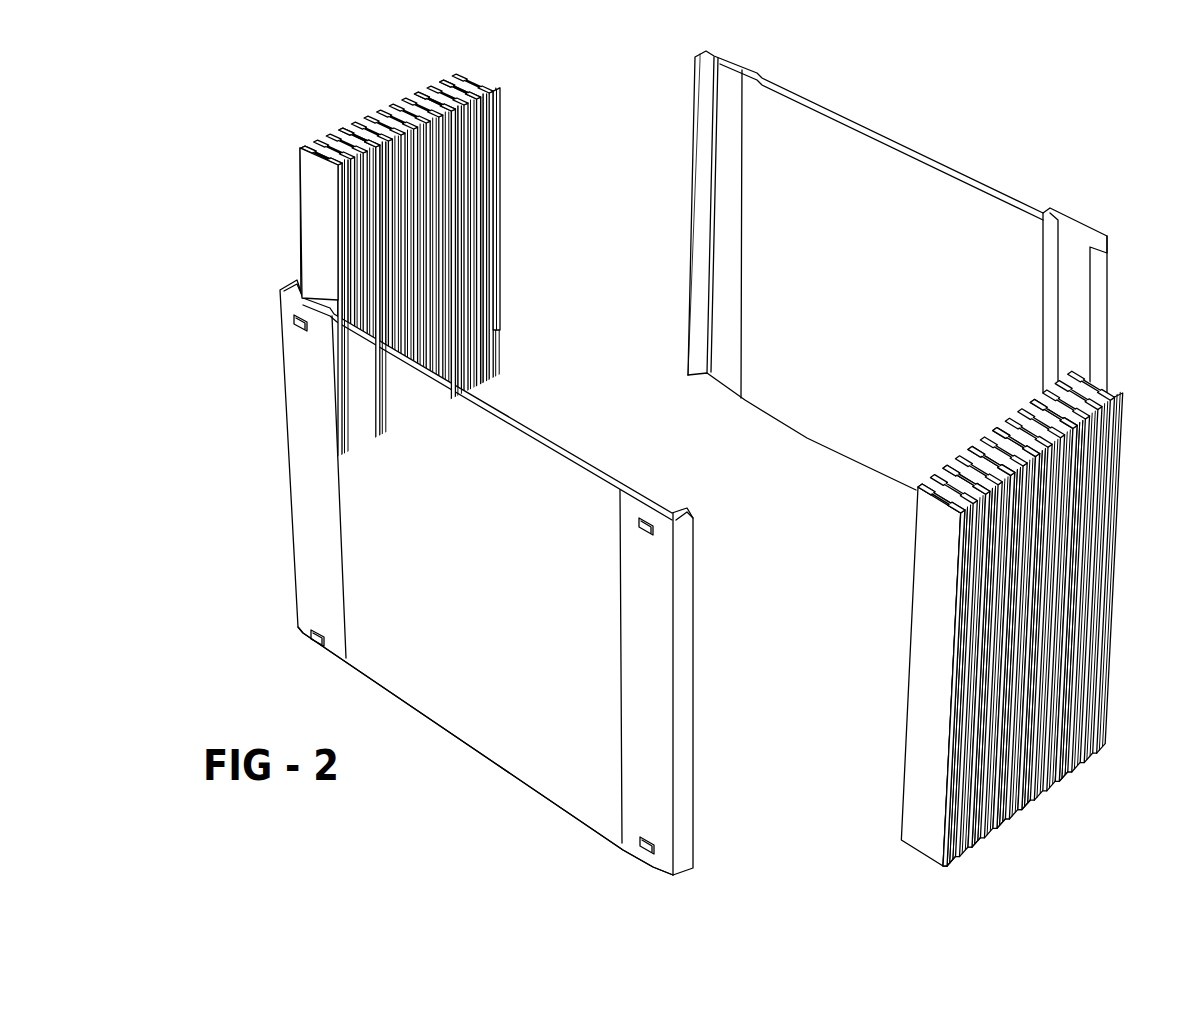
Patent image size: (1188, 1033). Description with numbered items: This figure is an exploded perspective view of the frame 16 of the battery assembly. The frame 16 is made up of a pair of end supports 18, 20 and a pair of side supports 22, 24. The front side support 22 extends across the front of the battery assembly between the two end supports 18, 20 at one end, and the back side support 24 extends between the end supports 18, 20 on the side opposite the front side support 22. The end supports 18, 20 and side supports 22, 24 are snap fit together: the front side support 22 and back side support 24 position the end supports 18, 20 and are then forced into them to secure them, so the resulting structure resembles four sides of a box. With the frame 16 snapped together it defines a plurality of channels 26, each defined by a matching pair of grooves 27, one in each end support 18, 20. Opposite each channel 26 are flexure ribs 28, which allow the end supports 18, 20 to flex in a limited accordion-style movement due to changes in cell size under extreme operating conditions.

The frame 16 is at (274, 342).
The end support 18 is at (918, 855).
The end support 20 is at (299, 211).
The front side support 22 is at (377, 681).
The back side support 24 is at (888, 137).
The channel 26 is at (402, 110).
The groove 27 is at (460, 207).
The flexure rib 28 is at (325, 140).